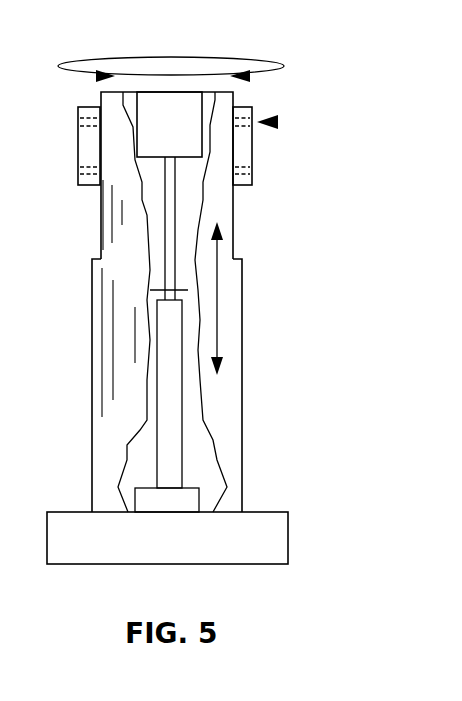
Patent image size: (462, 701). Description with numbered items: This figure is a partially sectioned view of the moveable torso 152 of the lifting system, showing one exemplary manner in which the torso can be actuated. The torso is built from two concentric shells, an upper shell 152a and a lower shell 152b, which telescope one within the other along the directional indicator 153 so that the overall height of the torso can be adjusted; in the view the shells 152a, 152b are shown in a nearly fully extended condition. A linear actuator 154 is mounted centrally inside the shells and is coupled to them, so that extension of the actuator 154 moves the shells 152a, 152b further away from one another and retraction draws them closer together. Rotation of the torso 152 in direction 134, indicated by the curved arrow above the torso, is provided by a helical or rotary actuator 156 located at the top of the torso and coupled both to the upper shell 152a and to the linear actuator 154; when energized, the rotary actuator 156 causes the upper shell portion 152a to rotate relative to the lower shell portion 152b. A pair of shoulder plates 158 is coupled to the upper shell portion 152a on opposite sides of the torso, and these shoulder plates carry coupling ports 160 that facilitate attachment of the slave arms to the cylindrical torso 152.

The direction of rotation 134 is at (270, 62).
The moveable torso 152 is at (244, 302).
The upper shell 152a is at (234, 210).
The lower shell 152b is at (243, 360).
The directional indicator 153 is at (243, 317).
The linear actuator 154 is at (175, 443).
The rotary actuator 156 is at (202, 108).
The shoulder plates 158 is at (253, 143).
The coupling ports 160 is at (278, 122).